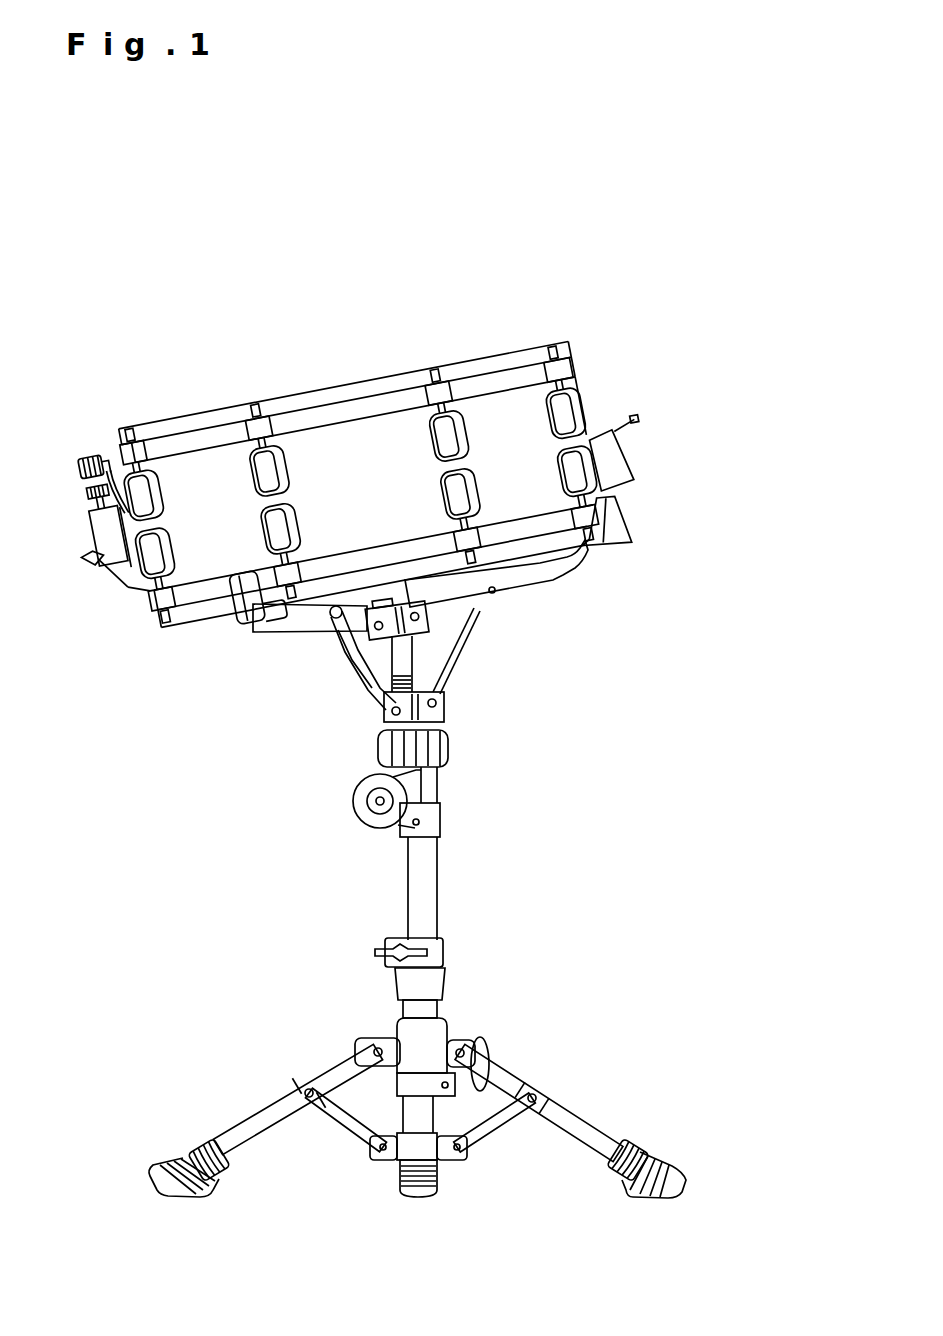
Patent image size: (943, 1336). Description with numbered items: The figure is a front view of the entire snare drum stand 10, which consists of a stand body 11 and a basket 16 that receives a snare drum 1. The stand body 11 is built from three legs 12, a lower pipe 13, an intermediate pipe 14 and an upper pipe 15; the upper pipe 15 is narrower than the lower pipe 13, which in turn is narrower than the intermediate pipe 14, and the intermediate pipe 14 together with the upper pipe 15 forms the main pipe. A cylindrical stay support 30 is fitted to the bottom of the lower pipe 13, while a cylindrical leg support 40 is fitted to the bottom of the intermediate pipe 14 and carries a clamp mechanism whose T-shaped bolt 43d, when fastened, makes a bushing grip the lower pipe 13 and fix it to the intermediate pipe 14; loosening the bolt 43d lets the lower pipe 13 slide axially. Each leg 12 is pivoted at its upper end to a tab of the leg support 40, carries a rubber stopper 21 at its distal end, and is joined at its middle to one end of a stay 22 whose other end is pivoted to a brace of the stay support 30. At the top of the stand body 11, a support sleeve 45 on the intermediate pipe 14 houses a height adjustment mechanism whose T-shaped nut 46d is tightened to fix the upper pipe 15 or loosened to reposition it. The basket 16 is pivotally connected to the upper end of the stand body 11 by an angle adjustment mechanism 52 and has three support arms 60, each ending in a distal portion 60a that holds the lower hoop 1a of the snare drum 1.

The snare drum 1 is at (359, 506).
The lower hoop 1a is at (191, 628).
The snare drum stand 10 is at (191, 830).
The stand body 11 is at (485, 1021).
The leg 12 is at (237, 1120).
The lower pipe 13 is at (400, 1112).
The intermediate pipe 14 is at (398, 1008).
The upper pipe 15 is at (440, 866).
The basket 16 is at (515, 664).
The rubber stopper 21 is at (192, 1200).
The stay 22 is at (330, 1122).
The stay support 30 is at (398, 1152).
The leg support 40 is at (448, 1031).
The T-shaped bolt 43d is at (491, 1050).
The support sleeve 45 is at (446, 953).
The T-shaped nut 46d is at (374, 953).
The angle adjustment mechanism 52 is at (355, 792).
The support arm 60 is at (303, 634).
The distal portion 60a is at (242, 578).